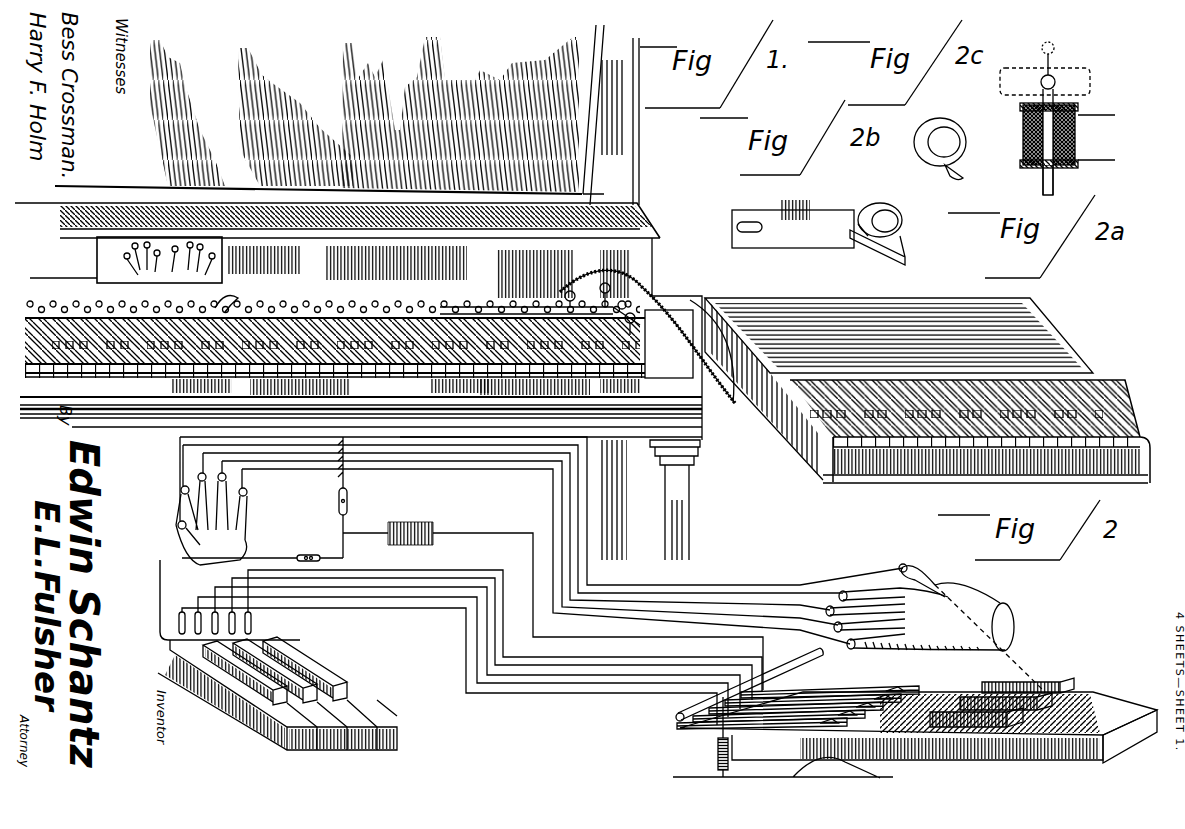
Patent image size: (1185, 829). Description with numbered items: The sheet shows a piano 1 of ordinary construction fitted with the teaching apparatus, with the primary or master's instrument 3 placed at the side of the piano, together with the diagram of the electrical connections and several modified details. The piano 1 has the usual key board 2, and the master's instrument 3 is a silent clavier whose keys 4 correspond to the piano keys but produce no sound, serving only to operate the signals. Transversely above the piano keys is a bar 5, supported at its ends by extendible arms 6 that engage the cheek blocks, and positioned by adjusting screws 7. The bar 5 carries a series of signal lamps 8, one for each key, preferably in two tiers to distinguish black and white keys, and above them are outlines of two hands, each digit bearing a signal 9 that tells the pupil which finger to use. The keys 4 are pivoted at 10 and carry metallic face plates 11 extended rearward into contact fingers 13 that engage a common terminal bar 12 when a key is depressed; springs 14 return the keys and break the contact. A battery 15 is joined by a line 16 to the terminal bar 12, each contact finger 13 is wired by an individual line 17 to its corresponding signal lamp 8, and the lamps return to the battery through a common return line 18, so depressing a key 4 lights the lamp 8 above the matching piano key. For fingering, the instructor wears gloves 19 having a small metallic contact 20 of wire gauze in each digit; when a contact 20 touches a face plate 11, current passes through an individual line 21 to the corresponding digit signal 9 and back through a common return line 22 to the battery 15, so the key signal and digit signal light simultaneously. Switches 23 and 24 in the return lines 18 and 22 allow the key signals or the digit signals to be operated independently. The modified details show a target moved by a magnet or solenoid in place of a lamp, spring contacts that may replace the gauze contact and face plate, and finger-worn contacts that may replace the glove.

In FIG. 1, the piano 1 is at (640, 198).
In FIG. 1, the key board 2 is at (180, 360).
In FIG. 2, the primary or master's instrument 3 is at (1062, 352).
In FIG. 2, the keys 4 is at (1100, 422).
In FIG. 1, the bar 5 is at (300, 292).
In FIG. 1, the extendible arms 6 is at (505, 302).
In FIG. 1, the adjusting screws 7 is at (575, 292).
In FIG. 1, the signal lamps 8 is at (256, 624).
In FIG. 1, the signal 9 is at (124, 258).
In FIG. 2, the pivot 10 is at (892, 694).
In FIG. 2, the metallic face plates 11 is at (788, 728).
In FIG. 2, the common terminal bar 12 is at (780, 668).
In FIG. 2, the contact fingers 13 is at (684, 727).
In FIG. 2, the springs 14 is at (718, 757).
In FIG. 1, the battery 15 is at (422, 520).
In FIG. 1, the line 16 is at (498, 540).
In FIG. 1, the individual line 17 is at (442, 610).
In FIG. 1, the common return line 18 is at (280, 556).
In FIG. 2, the gloves 19 is at (950, 592).
In FIG. 2, the metallic contact 20 is at (900, 566).
In FIG. 1, the individual lines 21 is at (608, 598).
In FIG. 1, the common return line 22 is at (340, 483).
In FIG. 1, the switch 23 is at (314, 549).
In FIG. 1, the switch 24 is at (347, 502).